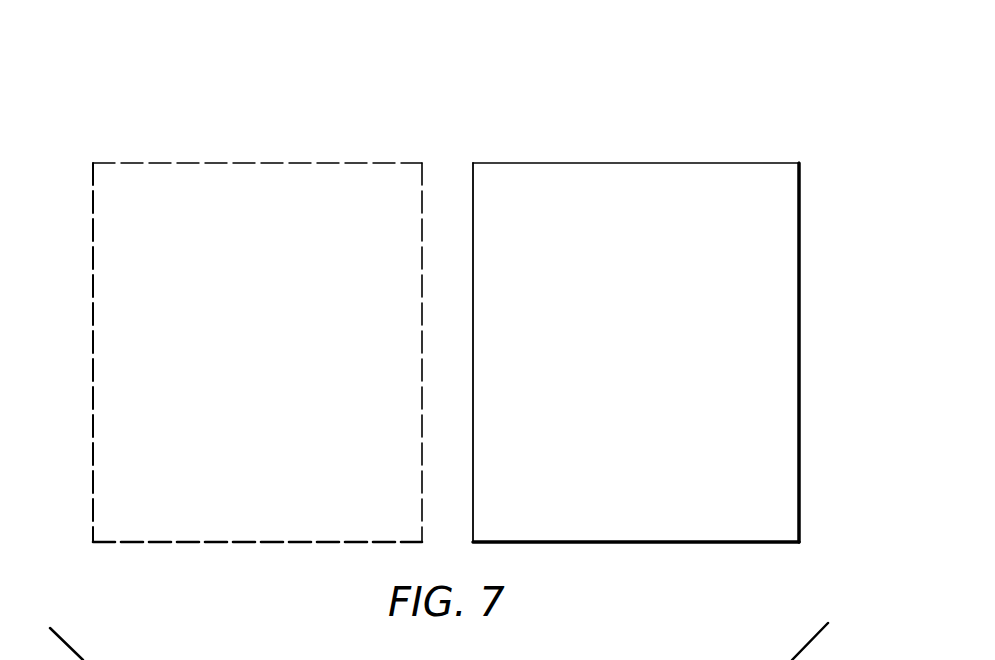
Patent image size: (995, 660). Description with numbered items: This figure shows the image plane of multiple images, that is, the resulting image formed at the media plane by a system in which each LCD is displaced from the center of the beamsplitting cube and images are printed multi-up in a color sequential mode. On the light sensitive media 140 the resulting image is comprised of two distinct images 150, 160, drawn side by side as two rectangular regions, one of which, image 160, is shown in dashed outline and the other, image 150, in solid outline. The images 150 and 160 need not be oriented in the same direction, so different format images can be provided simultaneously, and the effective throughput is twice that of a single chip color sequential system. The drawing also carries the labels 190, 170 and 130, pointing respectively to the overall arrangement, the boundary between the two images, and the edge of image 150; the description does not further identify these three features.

The display assembly 190 is at (110, 127).
The image 160 is at (235, 177).
The edge of dashed region 170 is at (414, 196).
The image 150 is at (641, 175).
The right edge of panel 130 is at (822, 213).
The light sensitive media 140 is at (820, 485).